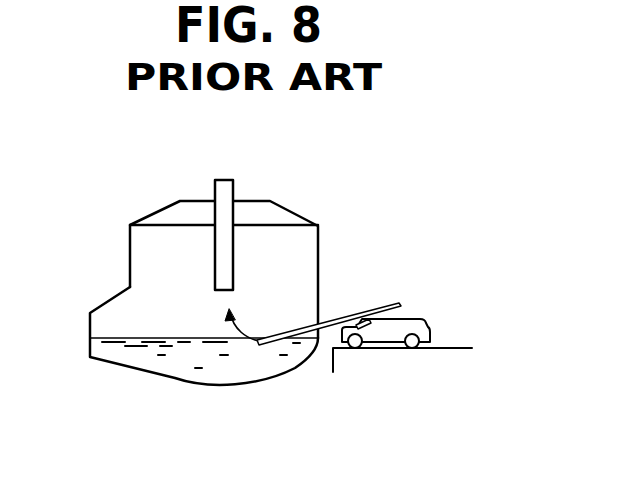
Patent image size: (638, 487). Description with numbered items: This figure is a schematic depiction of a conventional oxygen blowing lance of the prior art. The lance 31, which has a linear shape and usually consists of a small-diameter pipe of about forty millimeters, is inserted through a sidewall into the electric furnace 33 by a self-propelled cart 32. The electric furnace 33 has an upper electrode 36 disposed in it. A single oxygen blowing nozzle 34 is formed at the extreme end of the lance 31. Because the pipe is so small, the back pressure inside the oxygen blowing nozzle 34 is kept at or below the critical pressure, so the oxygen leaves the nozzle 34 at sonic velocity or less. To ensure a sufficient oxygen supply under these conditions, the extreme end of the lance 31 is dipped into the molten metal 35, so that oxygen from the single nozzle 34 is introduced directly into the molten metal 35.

The lance 31 is at (400, 306).
The self-propelled cart 32 is at (430, 327).
The electric furnace 33 is at (320, 248).
The oxygen blowing nozzle 34 is at (257, 345).
The molten metal 35 is at (143, 357).
The upper electrode 36 is at (234, 186).